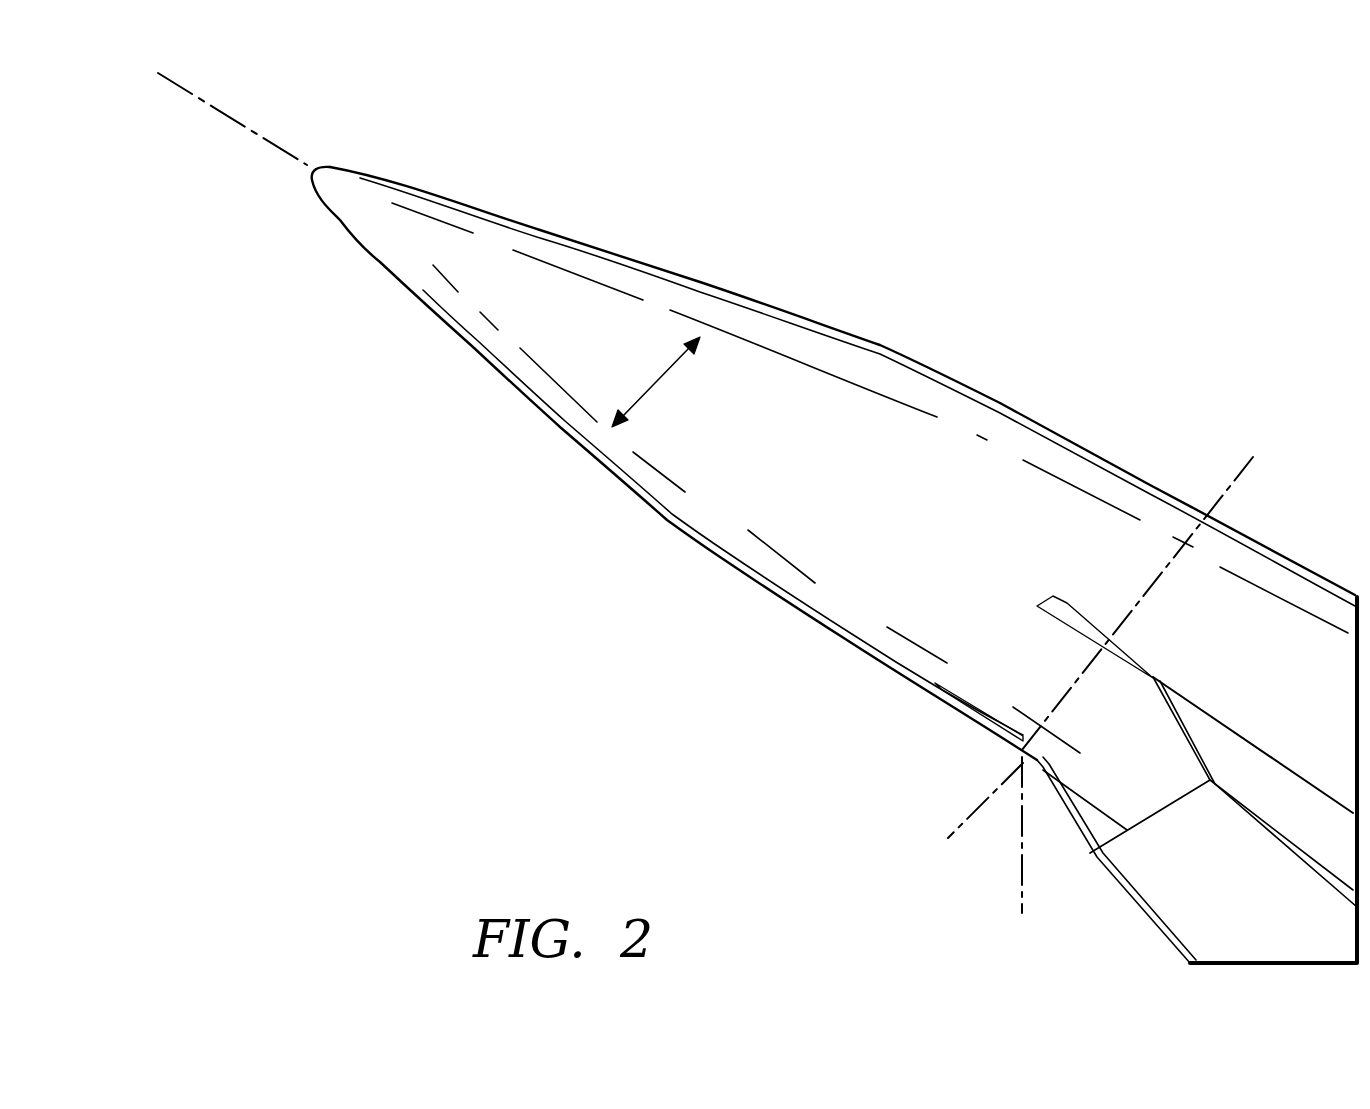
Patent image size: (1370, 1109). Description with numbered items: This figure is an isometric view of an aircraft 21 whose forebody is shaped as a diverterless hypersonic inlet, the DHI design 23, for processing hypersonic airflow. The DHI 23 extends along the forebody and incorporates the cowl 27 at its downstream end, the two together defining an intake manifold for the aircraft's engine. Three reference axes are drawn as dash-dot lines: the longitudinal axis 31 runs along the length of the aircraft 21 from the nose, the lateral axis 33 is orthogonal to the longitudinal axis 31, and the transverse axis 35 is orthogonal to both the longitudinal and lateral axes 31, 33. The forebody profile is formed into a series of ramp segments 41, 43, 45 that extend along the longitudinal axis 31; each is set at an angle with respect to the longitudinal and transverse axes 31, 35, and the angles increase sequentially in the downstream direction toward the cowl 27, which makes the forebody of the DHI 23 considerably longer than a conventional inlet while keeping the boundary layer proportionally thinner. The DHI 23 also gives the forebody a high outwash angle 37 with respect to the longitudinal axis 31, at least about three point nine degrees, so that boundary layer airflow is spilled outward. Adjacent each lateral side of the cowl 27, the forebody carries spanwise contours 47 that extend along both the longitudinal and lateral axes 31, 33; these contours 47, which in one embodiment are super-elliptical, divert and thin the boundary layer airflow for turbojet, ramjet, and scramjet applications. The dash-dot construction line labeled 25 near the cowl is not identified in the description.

The aircraft 21 is at (181, 291).
The diverterless hypersonic inlet (DHI) design 23 is at (588, 532).
The aft axis 25 is at (1167, 507).
The cowl 27 is at (1090, 857).
The longitudinal axis 31 is at (247, 128).
The lateral axis 33 is at (960, 818).
The transverse axis 35 is at (1023, 893).
The outwash angle 37 is at (1060, 600).
The ramp segment 41 is at (767, 380).
The ramp segment 43 is at (897, 490).
The ramp segment 45 is at (970, 603).
The spanwise contours 47 is at (653, 383).